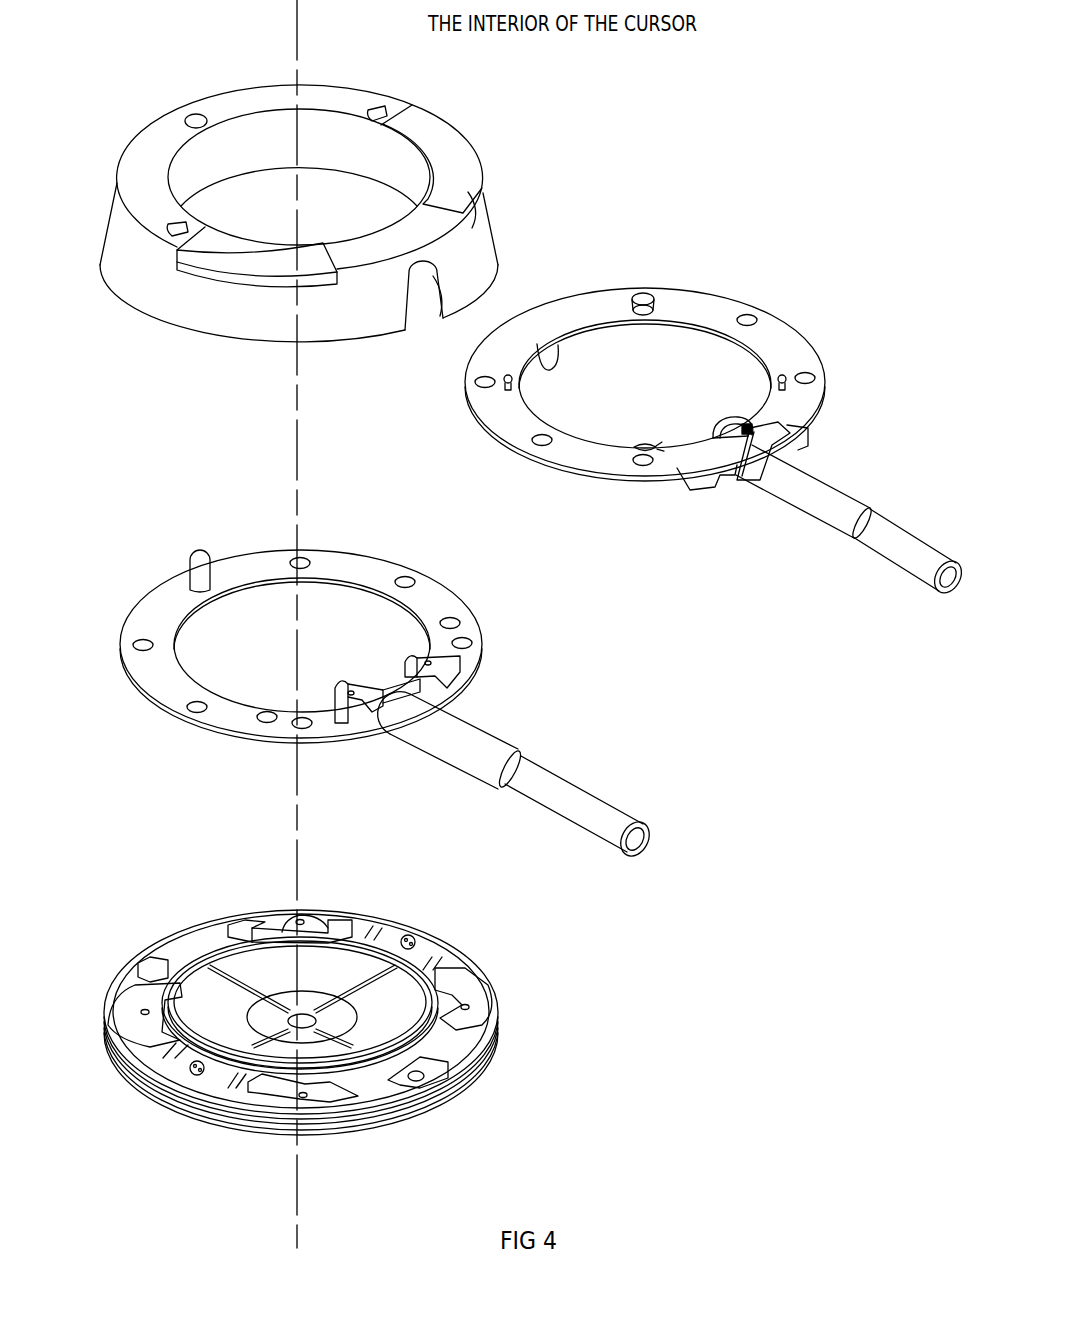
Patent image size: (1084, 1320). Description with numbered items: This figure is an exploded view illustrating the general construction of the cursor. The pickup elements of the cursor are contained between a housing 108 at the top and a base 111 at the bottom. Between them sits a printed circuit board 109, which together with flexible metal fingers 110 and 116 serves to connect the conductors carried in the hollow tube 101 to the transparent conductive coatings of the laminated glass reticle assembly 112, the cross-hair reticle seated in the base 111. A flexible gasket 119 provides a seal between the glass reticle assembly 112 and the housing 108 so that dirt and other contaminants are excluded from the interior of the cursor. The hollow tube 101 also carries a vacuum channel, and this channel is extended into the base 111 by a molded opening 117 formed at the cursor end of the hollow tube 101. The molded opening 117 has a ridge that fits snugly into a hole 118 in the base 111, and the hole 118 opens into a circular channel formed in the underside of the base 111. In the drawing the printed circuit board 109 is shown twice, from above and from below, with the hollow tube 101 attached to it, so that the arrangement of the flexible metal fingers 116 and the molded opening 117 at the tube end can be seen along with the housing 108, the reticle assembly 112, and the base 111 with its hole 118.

The hollow tube 101 is at (897, 555).
The housing 108 is at (477, 238).
The printed circuit board 109 is at (706, 312).
The flexible metal fingers 110 is at (475, 1003).
The base 111 is at (497, 1050).
The laminated glass reticle assembly 112 is at (255, 976).
The flexible metal fingers 116 is at (728, 428).
The molded opening 117 is at (745, 421).
The hole 118 is at (432, 1082).
The flexible gasket 119 is at (378, 946).